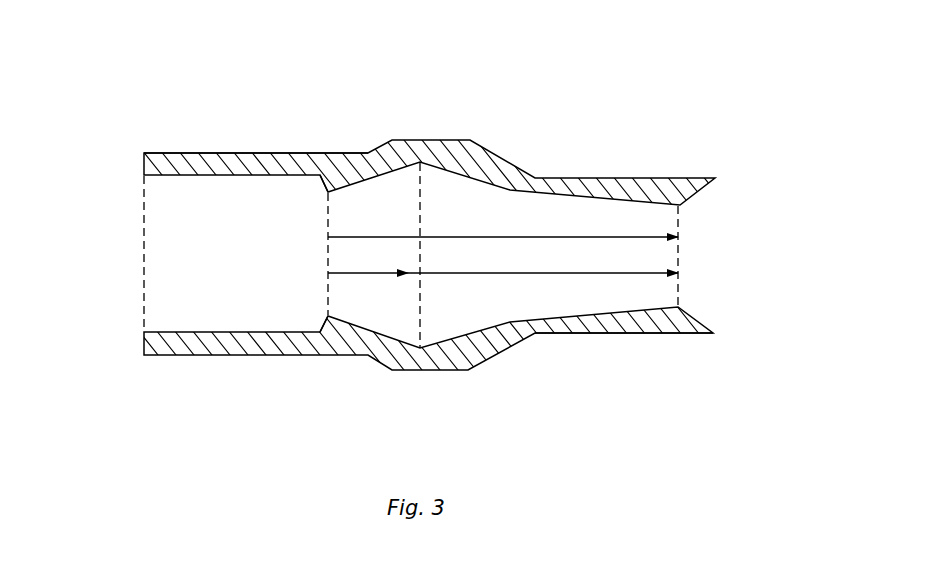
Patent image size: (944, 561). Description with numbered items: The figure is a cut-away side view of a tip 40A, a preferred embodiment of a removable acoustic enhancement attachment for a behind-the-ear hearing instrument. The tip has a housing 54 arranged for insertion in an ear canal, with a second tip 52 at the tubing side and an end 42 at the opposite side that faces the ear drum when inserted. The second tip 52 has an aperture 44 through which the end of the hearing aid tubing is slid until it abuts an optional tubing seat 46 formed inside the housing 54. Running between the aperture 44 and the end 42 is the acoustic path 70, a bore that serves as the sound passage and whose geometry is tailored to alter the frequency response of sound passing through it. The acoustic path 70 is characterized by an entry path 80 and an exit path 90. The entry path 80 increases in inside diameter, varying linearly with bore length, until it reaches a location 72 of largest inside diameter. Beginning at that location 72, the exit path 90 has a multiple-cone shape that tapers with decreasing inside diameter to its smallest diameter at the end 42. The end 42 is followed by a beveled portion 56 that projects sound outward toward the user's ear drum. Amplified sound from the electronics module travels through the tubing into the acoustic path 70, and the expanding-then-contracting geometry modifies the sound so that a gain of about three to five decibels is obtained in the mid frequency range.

The tip 40A is at (553, 90).
The end 42 is at (682, 255).
The aperture 44 is at (142, 250).
The tubing seat 46 is at (325, 187).
The second tip 52 is at (142, 163).
The housing 54 is at (648, 336).
The beveled portion 56 is at (690, 318).
The acoustic path 70 is at (569, 240).
The location of largest inside diameter 72 is at (418, 310).
The entry path 80 is at (380, 273).
The exit path 90 is at (548, 273).